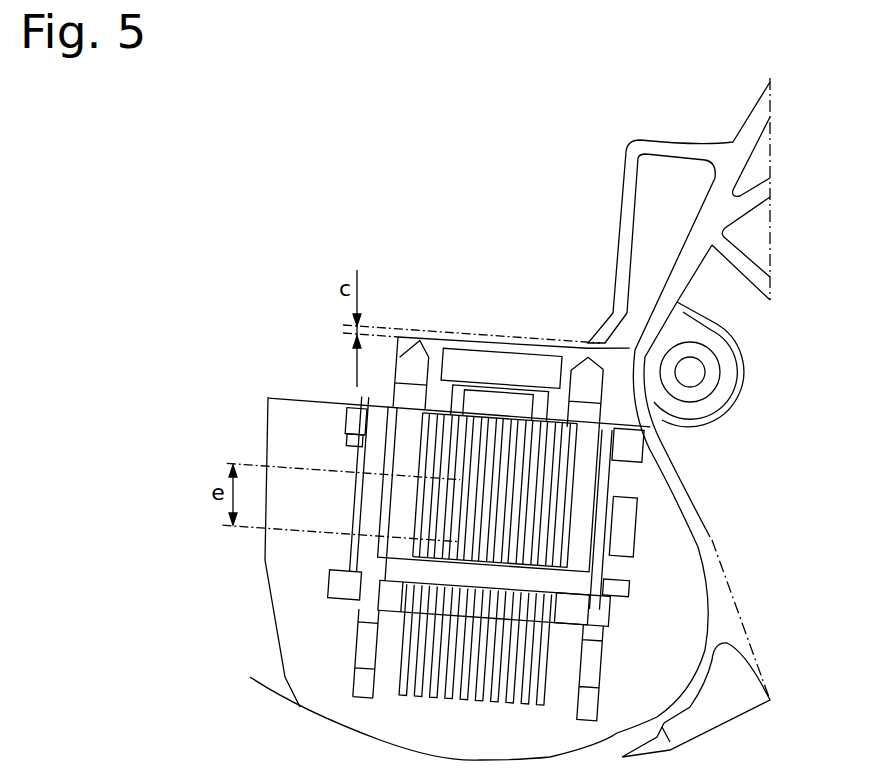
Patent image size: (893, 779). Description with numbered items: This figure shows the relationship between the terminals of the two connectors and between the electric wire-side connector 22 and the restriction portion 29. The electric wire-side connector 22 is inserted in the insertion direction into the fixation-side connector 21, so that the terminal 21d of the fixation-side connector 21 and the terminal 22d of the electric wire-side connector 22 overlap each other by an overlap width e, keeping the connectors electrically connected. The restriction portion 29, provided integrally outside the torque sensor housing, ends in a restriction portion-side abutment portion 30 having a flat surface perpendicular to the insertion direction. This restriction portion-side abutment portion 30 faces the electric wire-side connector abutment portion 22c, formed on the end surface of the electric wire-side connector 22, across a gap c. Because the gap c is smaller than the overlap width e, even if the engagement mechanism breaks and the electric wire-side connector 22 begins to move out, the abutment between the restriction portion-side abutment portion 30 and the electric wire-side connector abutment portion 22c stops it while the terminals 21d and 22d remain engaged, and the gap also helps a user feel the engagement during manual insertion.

The restriction portion 29 is at (645, 236).
The restriction portion-side abutment portion 30 is at (600, 343).
The electric wire-side connector abutment portion 22c is at (677, 375).
The electric wire-side connector 22 is at (420, 357).
The terminal 22d is at (420, 468).
The terminal 21d is at (557, 537).
The fixation-side connector 21 is at (580, 583).